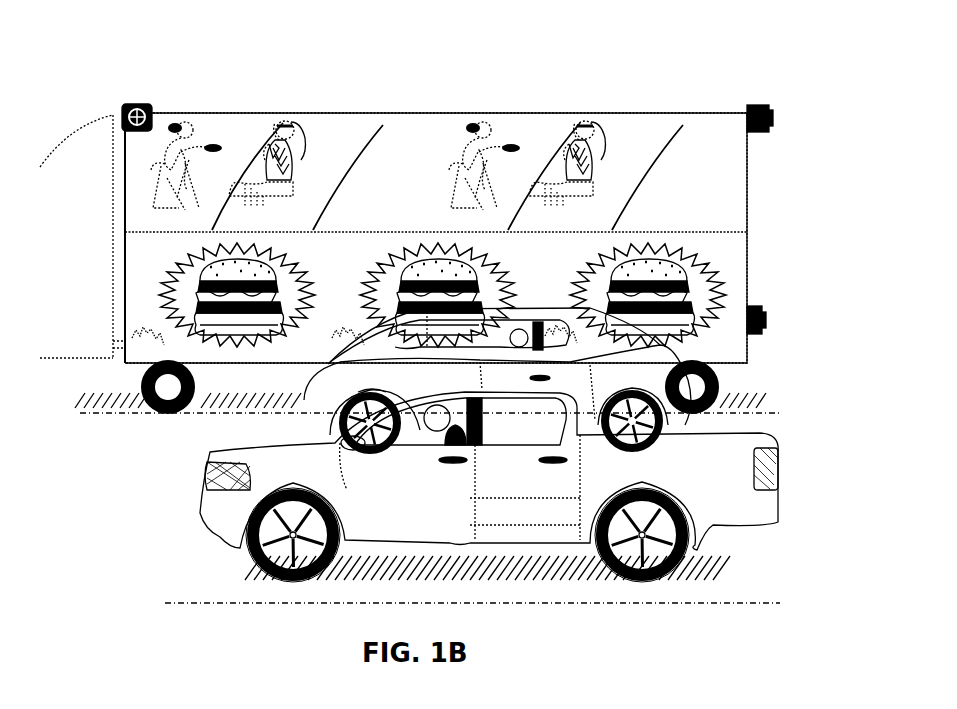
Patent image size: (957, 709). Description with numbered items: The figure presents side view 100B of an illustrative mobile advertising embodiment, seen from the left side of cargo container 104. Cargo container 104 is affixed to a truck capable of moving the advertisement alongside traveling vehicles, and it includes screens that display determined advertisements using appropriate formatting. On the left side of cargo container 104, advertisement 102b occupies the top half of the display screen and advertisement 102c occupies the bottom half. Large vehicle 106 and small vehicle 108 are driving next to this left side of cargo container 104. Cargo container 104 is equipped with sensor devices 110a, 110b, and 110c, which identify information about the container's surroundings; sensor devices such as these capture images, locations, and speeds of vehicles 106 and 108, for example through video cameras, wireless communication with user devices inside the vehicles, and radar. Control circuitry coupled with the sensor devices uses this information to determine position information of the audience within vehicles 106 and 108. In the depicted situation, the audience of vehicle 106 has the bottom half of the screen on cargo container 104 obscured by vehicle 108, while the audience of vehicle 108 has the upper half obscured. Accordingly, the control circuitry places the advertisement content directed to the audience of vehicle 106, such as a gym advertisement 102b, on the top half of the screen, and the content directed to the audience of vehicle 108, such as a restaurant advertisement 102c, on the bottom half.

The side view 100B is at (438, 70).
The advertisement 102b is at (748, 166).
The advertisement 102c is at (748, 256).
The cargo container 104 is at (226, 112).
The large vehicle 106 is at (203, 516).
The small vehicle 108 is at (318, 422).
The sensor device 110a is at (764, 106).
The sensor device 110b is at (132, 104).
The sensor device 110c is at (757, 310).